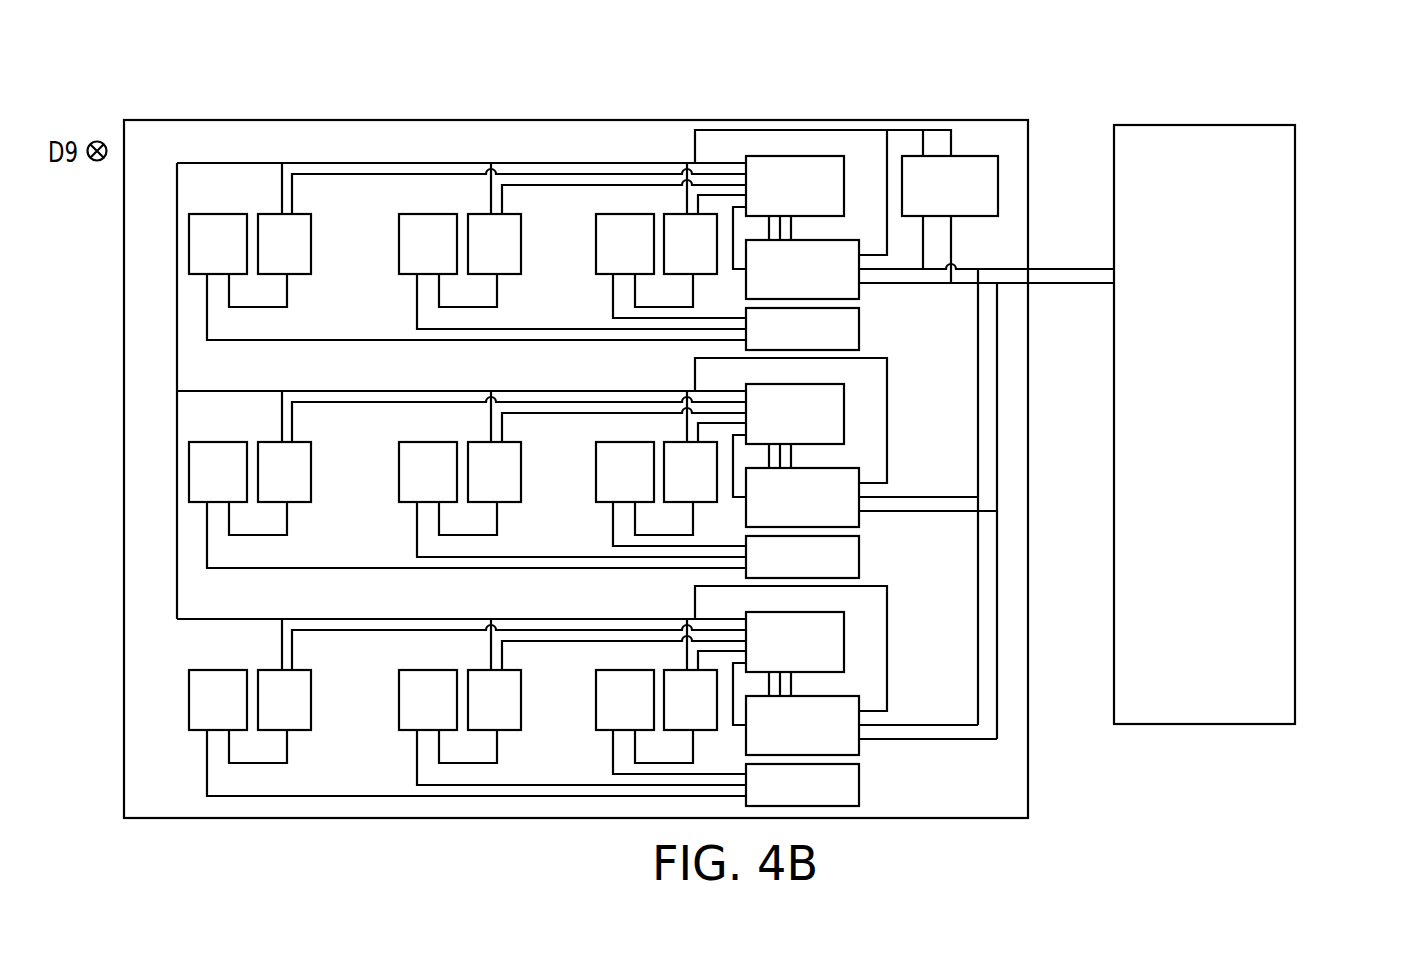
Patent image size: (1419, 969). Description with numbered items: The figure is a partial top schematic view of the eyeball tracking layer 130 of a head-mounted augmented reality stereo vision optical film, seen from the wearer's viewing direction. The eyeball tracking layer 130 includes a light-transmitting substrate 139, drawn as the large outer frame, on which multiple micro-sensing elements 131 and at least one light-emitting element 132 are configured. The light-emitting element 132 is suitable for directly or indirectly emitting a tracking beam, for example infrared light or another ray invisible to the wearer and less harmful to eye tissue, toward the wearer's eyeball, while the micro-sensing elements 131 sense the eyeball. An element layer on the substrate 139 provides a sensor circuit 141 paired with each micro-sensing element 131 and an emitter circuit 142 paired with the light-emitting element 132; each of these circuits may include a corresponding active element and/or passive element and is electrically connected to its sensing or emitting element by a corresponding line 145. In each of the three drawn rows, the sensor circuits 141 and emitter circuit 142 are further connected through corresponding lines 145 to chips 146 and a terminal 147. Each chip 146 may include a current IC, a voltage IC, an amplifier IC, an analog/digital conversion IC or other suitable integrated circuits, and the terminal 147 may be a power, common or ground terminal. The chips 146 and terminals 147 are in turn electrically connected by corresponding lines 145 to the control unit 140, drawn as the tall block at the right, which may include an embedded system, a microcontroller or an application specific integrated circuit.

The eyeball tracking layer 130 is at (987, 97).
The micro-sensing element 131 is at (239, 258).
The light-emitting element 132 is at (449, 486).
The substrate 139 is at (148, 148).
The control unit 140 is at (1295, 200).
The sensor circuit 141 is at (306, 258).
The emitter circuit 142 is at (516, 486).
The line 145 is at (380, 163).
The chip 146 is at (817, 200).
The terminal 147 is at (824, 344).